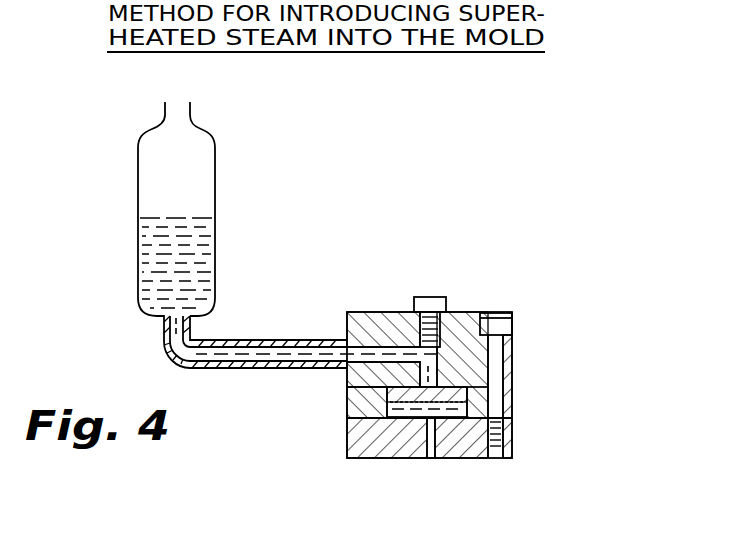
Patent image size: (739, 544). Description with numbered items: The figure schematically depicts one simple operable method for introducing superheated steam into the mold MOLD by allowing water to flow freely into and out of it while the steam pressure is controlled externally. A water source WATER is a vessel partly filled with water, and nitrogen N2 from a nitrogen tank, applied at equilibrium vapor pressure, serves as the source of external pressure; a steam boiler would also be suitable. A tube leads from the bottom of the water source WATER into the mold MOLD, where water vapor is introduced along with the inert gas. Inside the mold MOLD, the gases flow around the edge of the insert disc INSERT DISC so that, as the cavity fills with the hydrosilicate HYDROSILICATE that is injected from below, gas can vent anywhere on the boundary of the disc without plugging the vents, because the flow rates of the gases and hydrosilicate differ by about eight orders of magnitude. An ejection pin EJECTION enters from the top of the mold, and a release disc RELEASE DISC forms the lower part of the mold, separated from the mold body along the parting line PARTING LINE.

The nitrogen N2 is at (176, 67).
The water source WATER is at (215, 180).
The mold MOLD is at (366, 312).
The ejection EJECTION is at (430, 297).
The insert disc INSERT DISC is at (388, 394).
The release disc RELEASE DISC is at (385, 432).
The parting line PARTING LINE is at (492, 419).
The hydrosilicate injected HYDROSILICATE is at (432, 458).